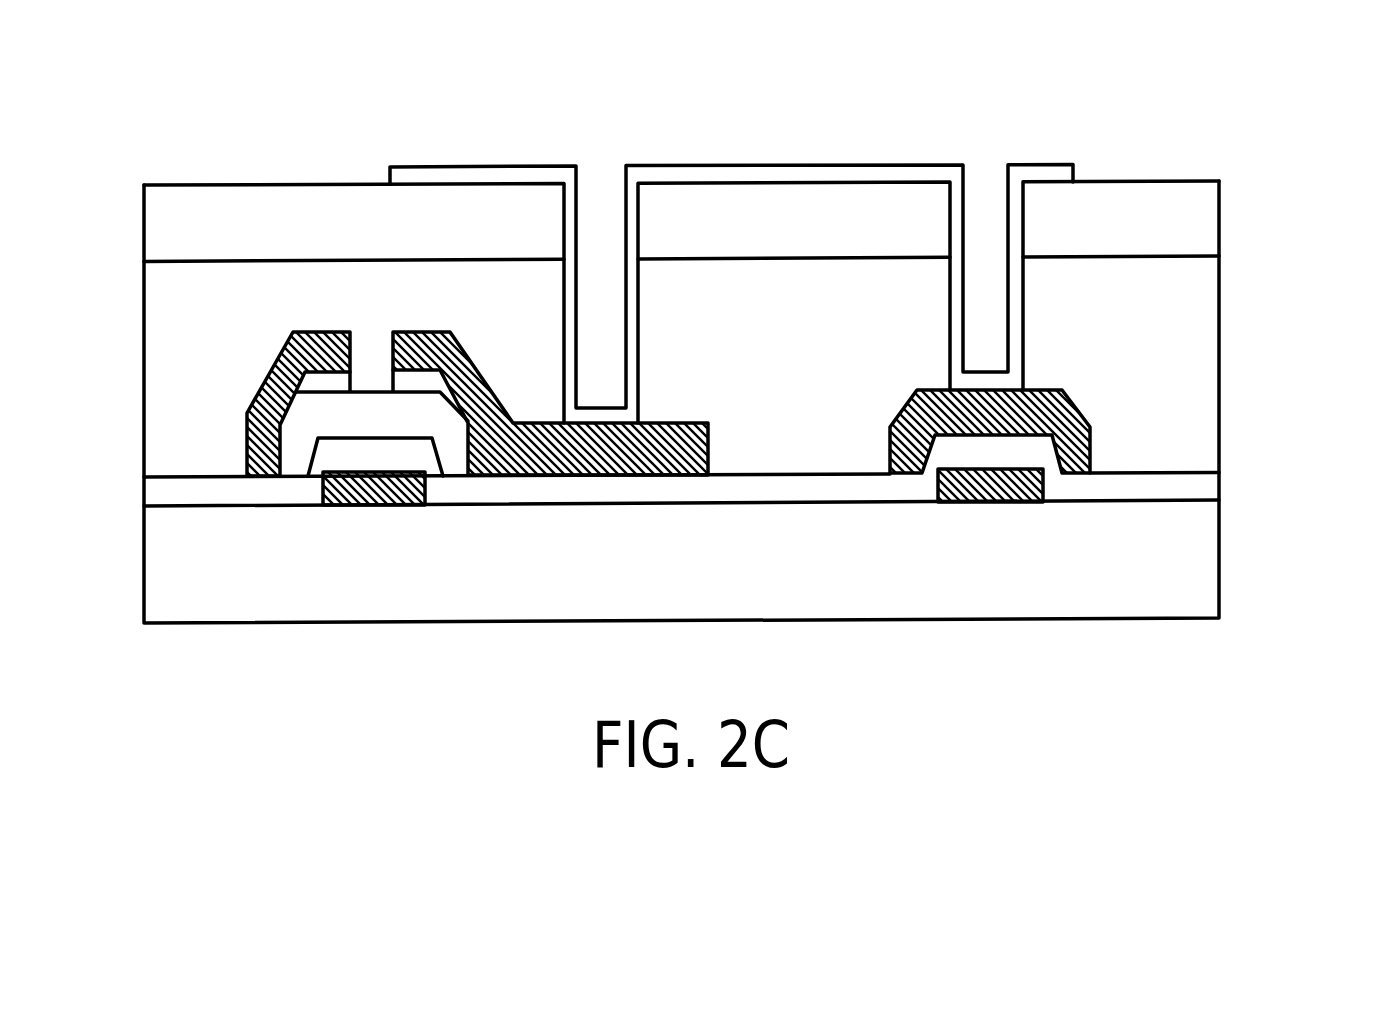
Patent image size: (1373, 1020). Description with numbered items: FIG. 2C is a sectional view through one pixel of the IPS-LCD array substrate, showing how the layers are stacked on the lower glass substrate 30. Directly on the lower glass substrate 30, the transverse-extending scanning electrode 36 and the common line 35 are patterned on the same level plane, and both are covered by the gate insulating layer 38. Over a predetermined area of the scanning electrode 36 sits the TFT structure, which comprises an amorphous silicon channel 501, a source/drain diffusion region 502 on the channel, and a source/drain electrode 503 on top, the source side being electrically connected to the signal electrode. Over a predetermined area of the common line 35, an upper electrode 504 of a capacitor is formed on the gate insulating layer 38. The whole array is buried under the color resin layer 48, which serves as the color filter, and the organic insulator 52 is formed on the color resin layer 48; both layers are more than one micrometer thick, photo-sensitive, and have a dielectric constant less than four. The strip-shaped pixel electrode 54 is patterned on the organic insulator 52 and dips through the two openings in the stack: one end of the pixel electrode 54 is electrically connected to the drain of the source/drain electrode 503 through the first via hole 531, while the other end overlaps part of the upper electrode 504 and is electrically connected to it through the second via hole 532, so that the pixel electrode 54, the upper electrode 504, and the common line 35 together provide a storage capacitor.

The lower glass substrate 30 is at (1202, 562).
The common line 35 is at (993, 500).
The scanning electrode 36 is at (375, 495).
The gate insulating layer 38 is at (1202, 483).
The color resin layer 48 is at (393, 309).
The organic insulator 52 is at (390, 239).
The pixel electrode 54 is at (797, 165).
The amorphous silicon channel 501 is at (292, 452).
The source/drain diffusion region 502 is at (252, 407).
The source/drain electrode 503 is at (280, 356).
The upper electrode 504 is at (1083, 447).
The first via hole 531 is at (603, 178).
The second via hole 532 is at (988, 178).